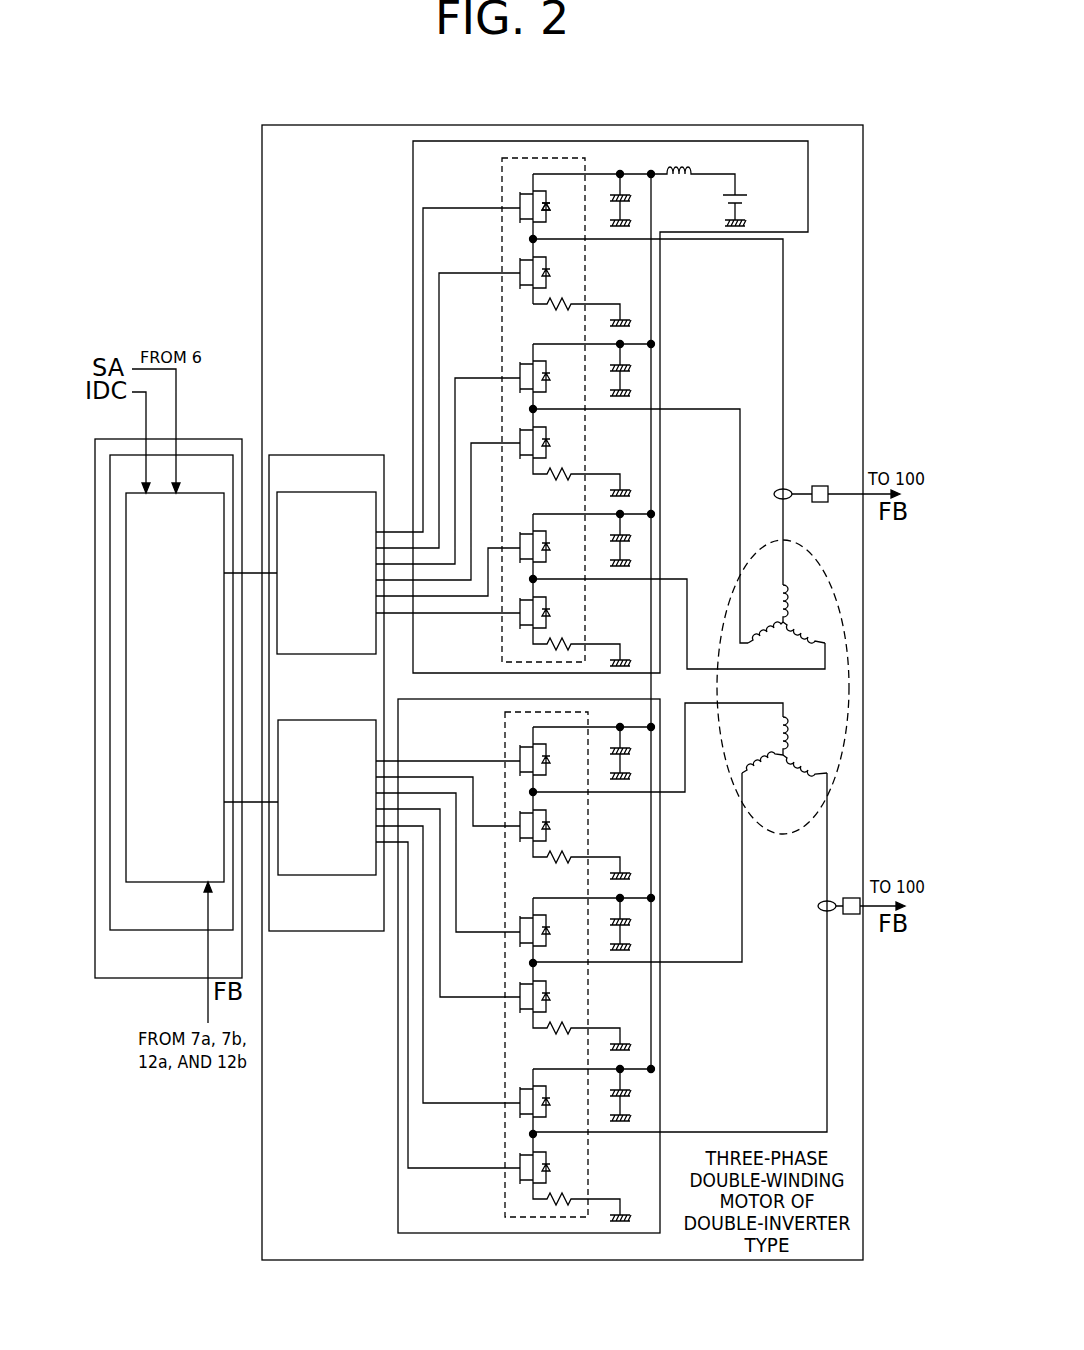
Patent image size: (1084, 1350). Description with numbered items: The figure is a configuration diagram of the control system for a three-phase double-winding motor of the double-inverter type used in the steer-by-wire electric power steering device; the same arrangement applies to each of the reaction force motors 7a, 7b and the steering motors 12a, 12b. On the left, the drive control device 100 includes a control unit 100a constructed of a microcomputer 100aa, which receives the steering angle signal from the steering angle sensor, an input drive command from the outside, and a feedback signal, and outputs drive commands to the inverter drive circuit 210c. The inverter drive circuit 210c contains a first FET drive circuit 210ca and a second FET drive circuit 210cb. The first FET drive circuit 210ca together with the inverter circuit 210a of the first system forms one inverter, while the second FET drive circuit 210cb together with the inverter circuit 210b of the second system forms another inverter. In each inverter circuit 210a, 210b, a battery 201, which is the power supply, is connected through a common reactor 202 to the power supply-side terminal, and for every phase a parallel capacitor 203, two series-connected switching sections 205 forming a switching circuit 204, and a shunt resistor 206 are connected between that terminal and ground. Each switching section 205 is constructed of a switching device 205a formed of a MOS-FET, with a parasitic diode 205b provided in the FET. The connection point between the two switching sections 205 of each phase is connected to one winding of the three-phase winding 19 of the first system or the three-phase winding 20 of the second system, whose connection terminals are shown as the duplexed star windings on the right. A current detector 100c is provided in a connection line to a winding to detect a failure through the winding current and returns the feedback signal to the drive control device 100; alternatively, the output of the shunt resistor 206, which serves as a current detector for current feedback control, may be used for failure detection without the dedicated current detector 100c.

The reaction force motor 7a is at (589, 665).
The reaction force motor 7b is at (589, 665).
The steering motor 12a is at (589, 665).
The steering motor 12b is at (863, 125).
The drive control device 100 is at (95, 978).
The control unit 100a is at (233, 455).
The microcomputer 100aa is at (125, 538).
The current detector 100c is at (820, 486).
The inverter circuit of the first system 210a is at (413, 175).
The inverter circuit of the second system 210b is at (598, 1233).
The inverter drive circuit 210c is at (300, 455).
The first FET drive circuit 210ca is at (348, 491).
The second FET drive circuit 210cb is at (325, 720).
The battery 201 is at (737, 200).
The common reactor 202 is at (680, 170).
The parallel capacitor 203 is at (623, 195).
The switching circuit 204 is at (513, 157).
The switching section 205 is at (525, 187).
The switching device 205a is at (520, 196).
The parasitic diode 205b is at (548, 200).
The shunt resistor 206 is at (565, 308).
The three-phase winding of the first system 19 is at (803, 610).
The three-phase winding of the second system 20 is at (803, 745).